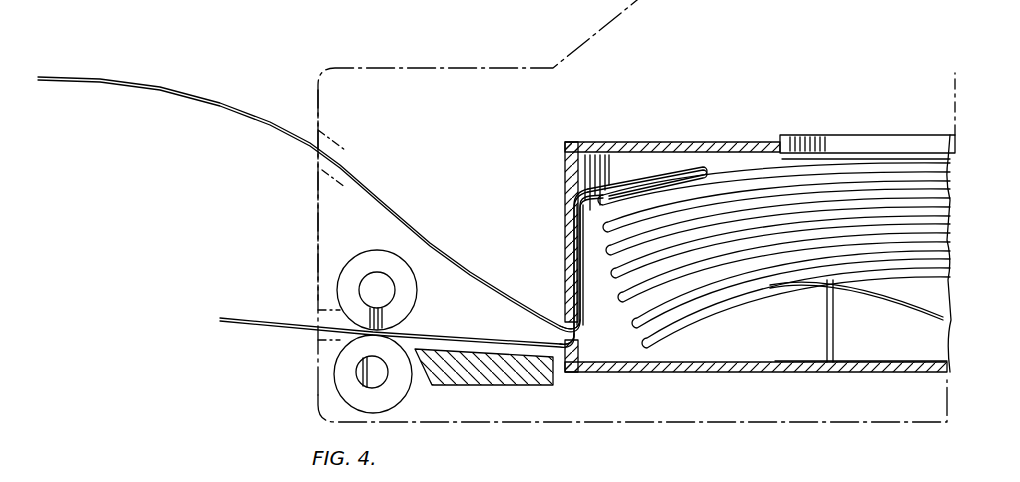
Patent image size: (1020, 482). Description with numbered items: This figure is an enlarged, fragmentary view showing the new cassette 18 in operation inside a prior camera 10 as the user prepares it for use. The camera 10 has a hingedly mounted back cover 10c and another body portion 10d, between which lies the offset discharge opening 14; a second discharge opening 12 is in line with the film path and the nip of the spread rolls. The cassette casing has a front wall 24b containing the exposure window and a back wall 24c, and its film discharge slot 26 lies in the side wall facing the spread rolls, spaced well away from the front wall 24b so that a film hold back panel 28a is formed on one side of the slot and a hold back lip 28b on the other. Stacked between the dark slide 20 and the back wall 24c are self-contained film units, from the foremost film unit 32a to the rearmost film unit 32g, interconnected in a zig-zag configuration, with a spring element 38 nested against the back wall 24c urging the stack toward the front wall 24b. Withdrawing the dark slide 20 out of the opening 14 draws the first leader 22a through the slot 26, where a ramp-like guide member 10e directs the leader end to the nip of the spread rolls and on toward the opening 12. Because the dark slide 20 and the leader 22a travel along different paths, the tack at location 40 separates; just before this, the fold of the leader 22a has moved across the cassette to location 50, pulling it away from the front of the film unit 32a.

The camera 10 is at (341, 63).
The back cover 10c is at (336, 268).
The other portion of the camera body 10d is at (317, 97).
The guide member 10e is at (468, 379).
The discharge opening 12 is at (316, 321).
The discharge opening 14 is at (318, 154).
The cassette 18 is at (771, 123).
The dark slide 20 is at (140, 80).
The leader 22a is at (264, 318).
The casing front wall 24b is at (639, 148).
The casing back wall 24c is at (777, 373).
The film discharge slot 26 is at (557, 325).
The film hold back panel 28a is at (575, 175).
The hold back lip 28b is at (578, 352).
The foremost film unit 32a is at (912, 170).
The film unit 32g is at (697, 317).
The spring element 38 is at (884, 287).
The location 40 is at (590, 262).
The location 50 is at (712, 168).